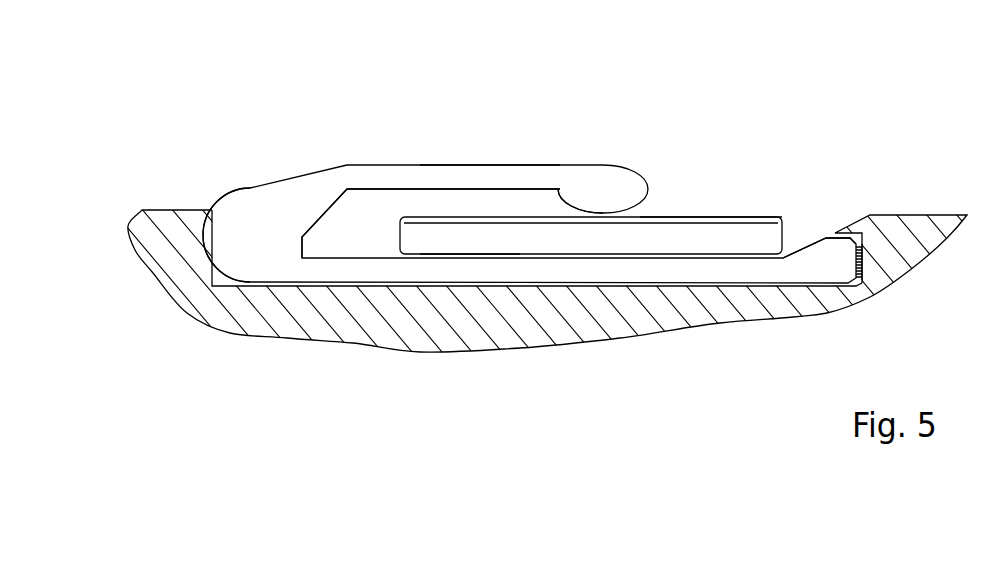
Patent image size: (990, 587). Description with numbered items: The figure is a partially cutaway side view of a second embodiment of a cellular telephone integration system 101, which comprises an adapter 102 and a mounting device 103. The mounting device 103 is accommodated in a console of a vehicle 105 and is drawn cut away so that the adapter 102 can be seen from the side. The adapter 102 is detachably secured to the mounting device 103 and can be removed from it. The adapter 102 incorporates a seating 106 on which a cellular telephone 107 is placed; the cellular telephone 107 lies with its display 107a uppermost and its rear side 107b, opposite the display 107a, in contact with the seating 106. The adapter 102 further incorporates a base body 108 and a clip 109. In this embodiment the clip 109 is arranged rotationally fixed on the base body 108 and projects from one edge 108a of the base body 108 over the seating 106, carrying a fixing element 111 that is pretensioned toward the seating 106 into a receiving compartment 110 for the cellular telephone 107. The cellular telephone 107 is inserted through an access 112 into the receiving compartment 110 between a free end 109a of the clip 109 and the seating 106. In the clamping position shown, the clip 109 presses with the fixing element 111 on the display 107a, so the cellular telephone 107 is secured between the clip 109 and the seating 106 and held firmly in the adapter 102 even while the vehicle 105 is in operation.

The cellular telephone integration system 101 is at (533, 191).
The adapter 102 is at (822, 250).
The mounting device 103 is at (902, 228).
The vehicle 105 is at (585, 378).
The seating 106 is at (350, 256).
The cellular telephone 107 is at (508, 237).
The display 107a is at (677, 215).
The rear side 107b is at (457, 258).
The base body 108 is at (803, 260).
The edge of the base body 108a is at (235, 218).
The clip 109 is at (509, 141).
The free end of the clip 109a is at (648, 187).
The receiving compartment 110 is at (428, 203).
The fixing element 111 is at (607, 198).
The access 112 is at (740, 175).